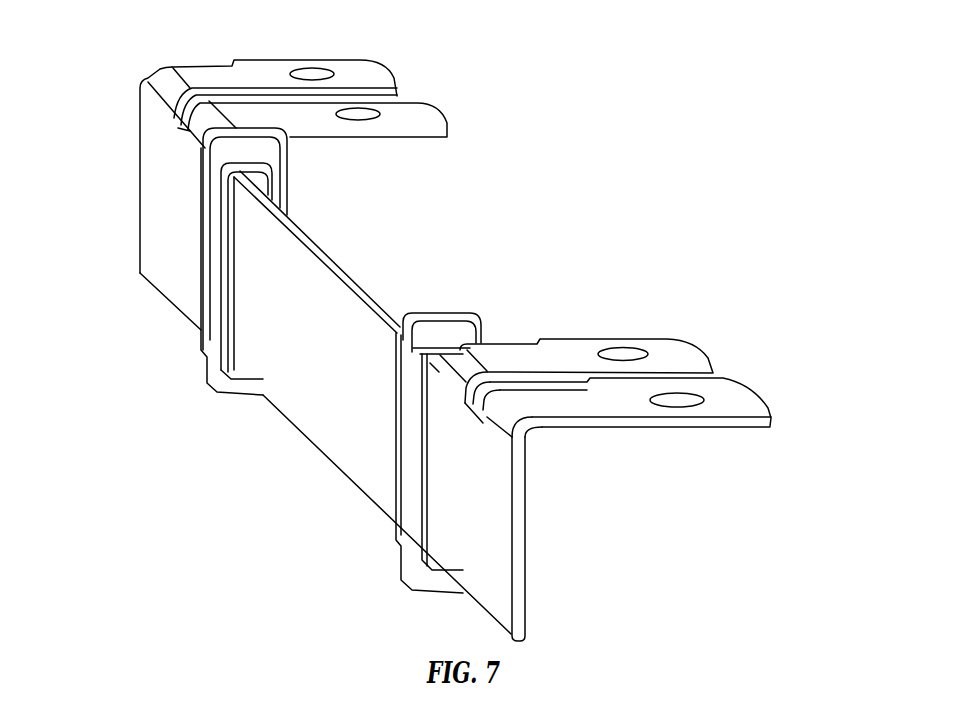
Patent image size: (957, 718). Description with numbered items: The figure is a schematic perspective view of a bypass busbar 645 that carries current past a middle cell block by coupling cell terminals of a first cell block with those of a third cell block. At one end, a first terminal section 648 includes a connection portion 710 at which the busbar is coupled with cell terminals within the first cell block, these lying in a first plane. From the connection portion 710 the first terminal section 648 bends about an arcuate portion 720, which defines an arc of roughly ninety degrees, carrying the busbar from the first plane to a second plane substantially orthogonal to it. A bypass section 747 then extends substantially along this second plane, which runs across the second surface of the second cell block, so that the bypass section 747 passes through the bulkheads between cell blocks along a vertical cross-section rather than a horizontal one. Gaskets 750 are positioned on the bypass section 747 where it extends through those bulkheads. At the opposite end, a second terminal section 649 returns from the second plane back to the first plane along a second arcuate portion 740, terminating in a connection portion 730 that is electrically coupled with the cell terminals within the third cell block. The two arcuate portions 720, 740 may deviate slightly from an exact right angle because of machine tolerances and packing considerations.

The bypass busbar 645 is at (613, 84).
The arcuate portion 720 is at (150, 85).
The first terminal section 648 is at (432, 112).
The connection portion 710 is at (447, 128).
The bypass section 747 is at (326, 266).
The gaskets 750 is at (446, 317).
The second terminal section 649 is at (658, 345).
The connection portion 730 is at (770, 417).
The arcuate portion 740 is at (530, 433).